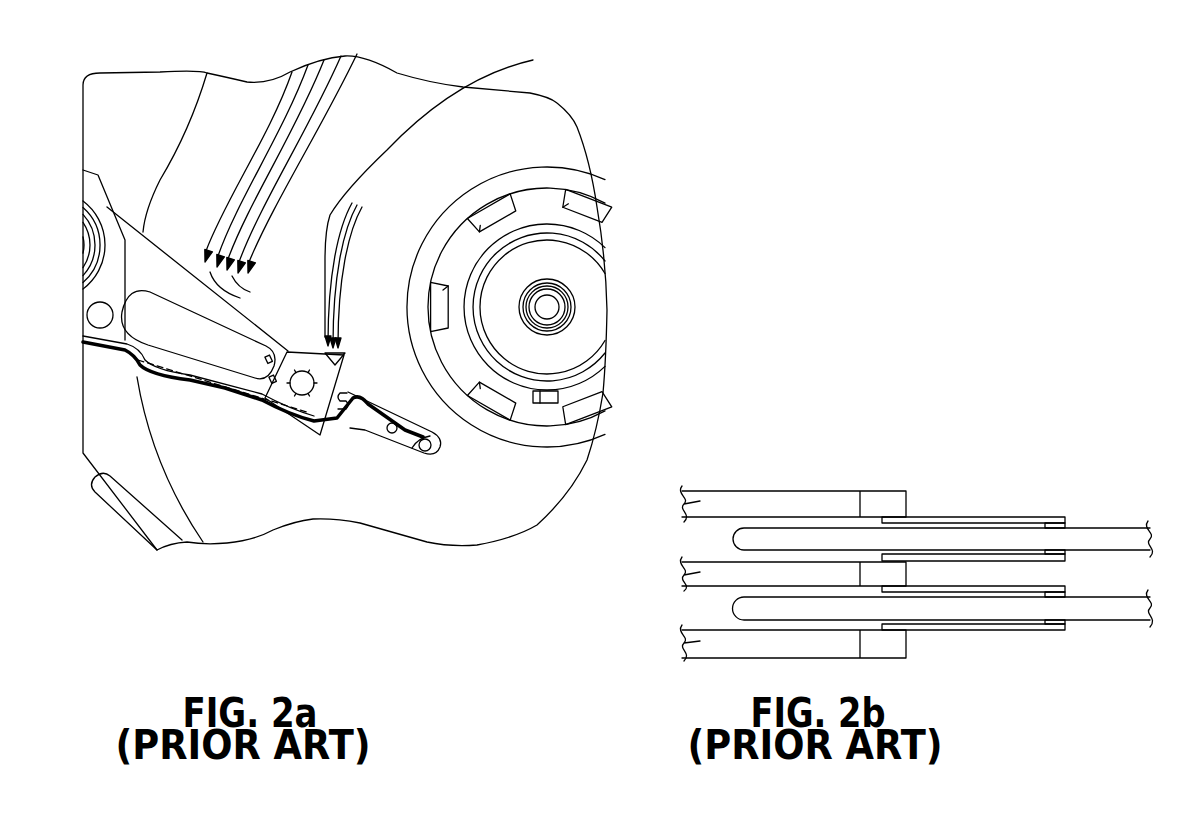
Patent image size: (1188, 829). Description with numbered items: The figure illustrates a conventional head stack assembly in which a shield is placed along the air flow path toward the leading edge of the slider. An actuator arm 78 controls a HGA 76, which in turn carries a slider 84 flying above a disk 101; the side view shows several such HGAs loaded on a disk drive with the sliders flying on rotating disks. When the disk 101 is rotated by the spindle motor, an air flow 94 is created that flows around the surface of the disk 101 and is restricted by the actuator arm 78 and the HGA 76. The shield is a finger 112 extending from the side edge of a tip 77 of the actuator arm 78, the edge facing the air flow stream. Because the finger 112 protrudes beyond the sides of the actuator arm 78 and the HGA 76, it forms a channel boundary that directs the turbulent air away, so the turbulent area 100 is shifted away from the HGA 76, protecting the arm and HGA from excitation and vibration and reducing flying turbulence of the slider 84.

In FIG. 2A, the HGA 76 is at (365, 417).
In FIG. 2B, the HGA 76 is at (937, 519).
In FIG. 2A, the tip of the actuator arm 77 is at (305, 398).
In FIG. 2A, the actuator arm 78 is at (217, 377).
In FIG. 2B, the actuator arm 78 is at (685, 503).
In FIG. 2A, the slider 84 is at (433, 458).
In FIG. 2B, the slider 84 is at (1063, 555).
In FIG. 2A, the air flow 94 is at (289, 142).
In FIG. 2A, the turbulent area 100 is at (352, 330).
In FIG. 2B, the disk 101 is at (1118, 612).
In FIG. 2A, the finger 112 is at (347, 358).